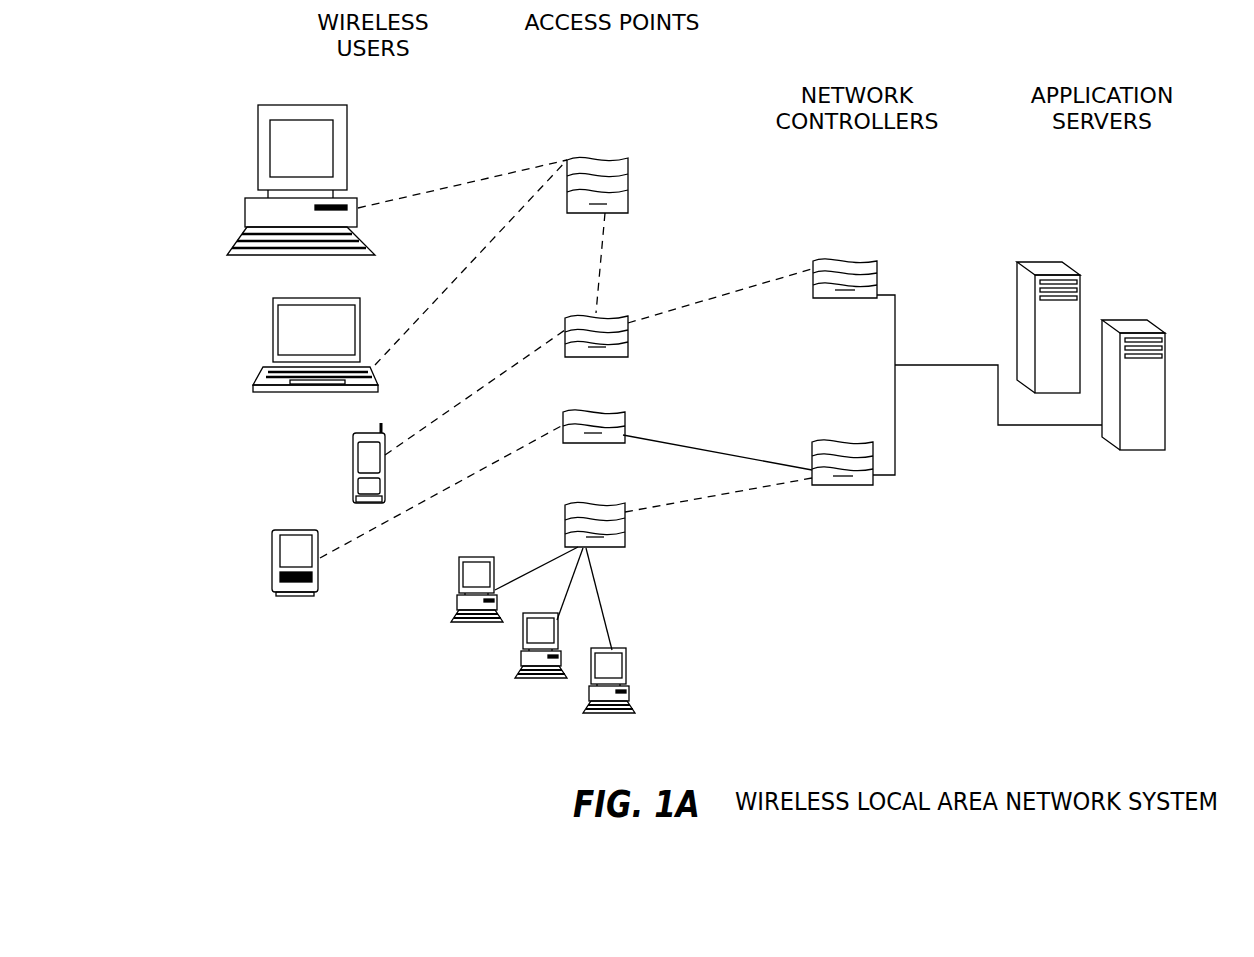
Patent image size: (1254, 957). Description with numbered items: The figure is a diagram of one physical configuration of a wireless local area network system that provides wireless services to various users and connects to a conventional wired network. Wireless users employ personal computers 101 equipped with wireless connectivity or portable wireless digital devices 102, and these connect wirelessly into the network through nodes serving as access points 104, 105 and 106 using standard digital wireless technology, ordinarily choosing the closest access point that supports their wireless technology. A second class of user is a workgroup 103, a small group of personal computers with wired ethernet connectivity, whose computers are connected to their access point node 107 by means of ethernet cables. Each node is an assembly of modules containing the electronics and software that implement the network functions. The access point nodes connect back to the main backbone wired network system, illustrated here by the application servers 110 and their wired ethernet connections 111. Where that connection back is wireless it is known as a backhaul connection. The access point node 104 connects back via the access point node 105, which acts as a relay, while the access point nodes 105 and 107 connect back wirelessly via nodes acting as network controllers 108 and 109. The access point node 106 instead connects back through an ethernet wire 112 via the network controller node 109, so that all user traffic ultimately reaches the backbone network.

The personal computers 101 is at (240, 198).
The portable wireless digital devices 102 is at (347, 478).
The workgroup 103 is at (490, 676).
The access point node 104 is at (643, 183).
The access point node 105 is at (633, 305).
The access point node 106 is at (635, 418).
The access point node 107 is at (622, 552).
The network controller node 108 is at (853, 250).
The network controller node 109 is at (850, 497).
The application servers 110 is at (1042, 253).
The wired ethernet connections 111 is at (935, 380).
The ethernet wire 112 is at (735, 450).